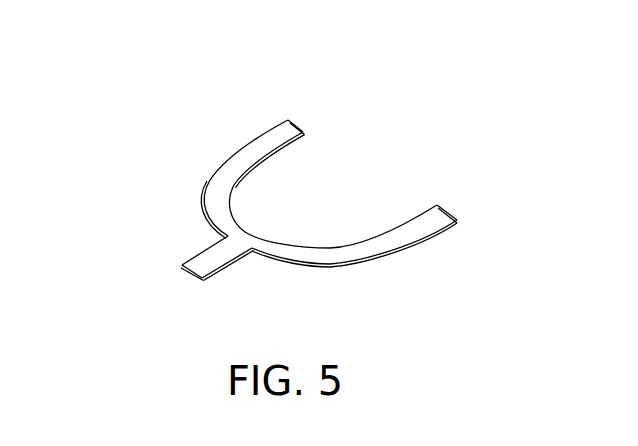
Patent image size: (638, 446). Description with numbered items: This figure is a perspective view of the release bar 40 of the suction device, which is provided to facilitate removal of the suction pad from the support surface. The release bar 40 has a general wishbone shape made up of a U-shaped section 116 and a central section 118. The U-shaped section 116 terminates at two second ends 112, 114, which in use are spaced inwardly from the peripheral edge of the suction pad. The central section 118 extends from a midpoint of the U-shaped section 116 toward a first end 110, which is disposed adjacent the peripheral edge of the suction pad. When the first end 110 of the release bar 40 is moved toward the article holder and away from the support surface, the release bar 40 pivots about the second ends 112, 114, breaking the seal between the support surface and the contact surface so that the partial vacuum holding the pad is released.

The release bar 40 is at (143, 97).
The first end 110 is at (200, 268).
The second end 112 is at (442, 210).
The second end 114 is at (290, 121).
The U-shaped section 116 is at (342, 253).
The central section 118 is at (217, 257).